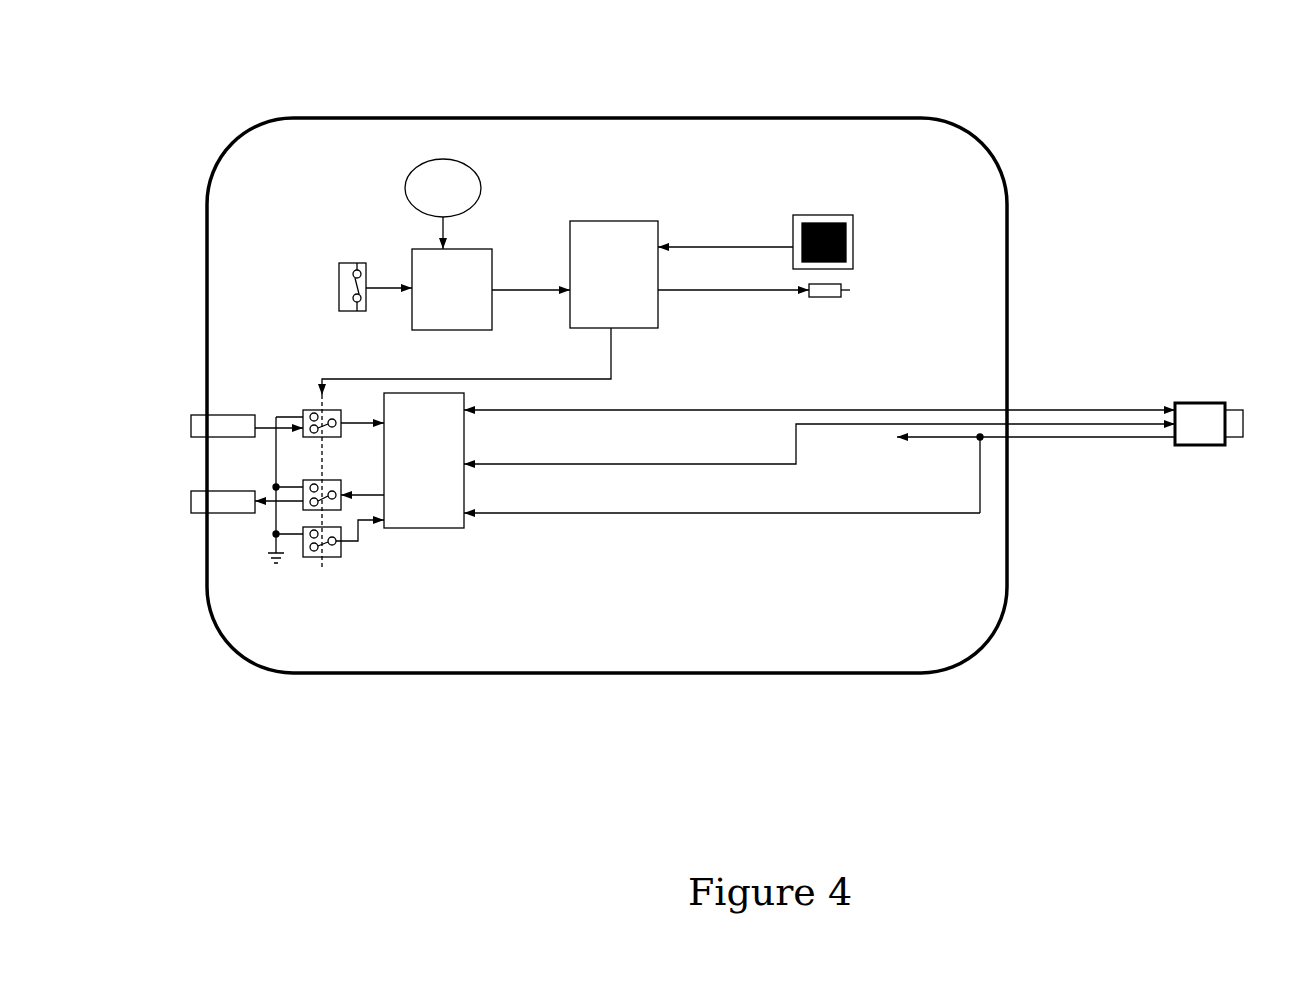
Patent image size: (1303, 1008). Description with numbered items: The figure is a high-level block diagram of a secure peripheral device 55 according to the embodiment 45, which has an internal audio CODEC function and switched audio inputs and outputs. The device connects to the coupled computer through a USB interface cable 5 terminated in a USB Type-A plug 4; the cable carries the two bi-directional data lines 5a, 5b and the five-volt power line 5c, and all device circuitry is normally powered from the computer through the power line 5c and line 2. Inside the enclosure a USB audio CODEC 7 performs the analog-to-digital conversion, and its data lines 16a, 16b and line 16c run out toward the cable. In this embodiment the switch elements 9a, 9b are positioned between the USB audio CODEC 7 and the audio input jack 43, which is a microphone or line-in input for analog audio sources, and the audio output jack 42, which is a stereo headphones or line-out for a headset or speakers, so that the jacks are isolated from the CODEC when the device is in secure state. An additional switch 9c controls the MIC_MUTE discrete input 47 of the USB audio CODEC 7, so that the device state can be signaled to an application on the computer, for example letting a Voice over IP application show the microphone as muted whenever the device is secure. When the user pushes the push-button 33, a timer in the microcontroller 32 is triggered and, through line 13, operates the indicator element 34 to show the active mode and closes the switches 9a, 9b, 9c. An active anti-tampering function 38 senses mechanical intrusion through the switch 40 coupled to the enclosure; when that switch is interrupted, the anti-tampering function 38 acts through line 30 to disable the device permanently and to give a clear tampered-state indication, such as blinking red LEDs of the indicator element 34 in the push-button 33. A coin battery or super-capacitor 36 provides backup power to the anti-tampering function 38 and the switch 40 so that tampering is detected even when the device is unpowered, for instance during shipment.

The processing device / electrical apparatus 55 is at (218, 97).
The secure peripheral device embodiment 45 is at (343, 673).
The coin battery or super-capacitor 36 is at (481, 188).
The active anti-tampering function 38 is at (412, 325).
The switch 40 is at (355, 263).
The line 30 is at (518, 292).
The microcontroller 32 is at (597, 221).
The push-button 33 is at (853, 246).
The indicator element 34 is at (850, 290).
The line 13 is at (611, 357).
The USB audio CODEC 7 is at (447, 528).
The audio input jack 43 is at (232, 415).
The audio output jack 42 is at (229, 513).
The switch element 9a is at (341, 411).
The switch element 9b is at (341, 481).
The switch 9c is at (310, 557).
The MIC_MUTE discrete input 47 is at (350, 541).
The line 16a is at (819, 379).
The line 16b is at (819, 413).
The line 16c is at (819, 507).
The USB interface cable 5 is at (819, 457).
The bi-directional data line 5a is at (1085, 410).
The bi-directional data line 5b is at (1110, 424).
The 5V power line 5c is at (1036, 473).
The line 2 is at (915, 441).
The USB Type-A plug 4 is at (1203, 403).